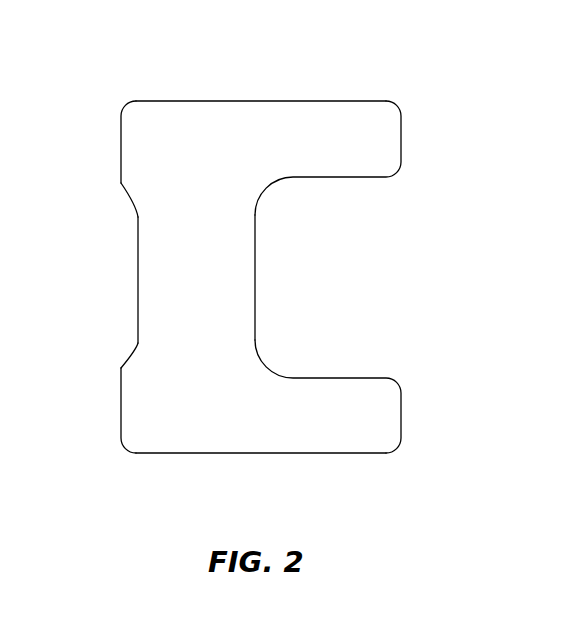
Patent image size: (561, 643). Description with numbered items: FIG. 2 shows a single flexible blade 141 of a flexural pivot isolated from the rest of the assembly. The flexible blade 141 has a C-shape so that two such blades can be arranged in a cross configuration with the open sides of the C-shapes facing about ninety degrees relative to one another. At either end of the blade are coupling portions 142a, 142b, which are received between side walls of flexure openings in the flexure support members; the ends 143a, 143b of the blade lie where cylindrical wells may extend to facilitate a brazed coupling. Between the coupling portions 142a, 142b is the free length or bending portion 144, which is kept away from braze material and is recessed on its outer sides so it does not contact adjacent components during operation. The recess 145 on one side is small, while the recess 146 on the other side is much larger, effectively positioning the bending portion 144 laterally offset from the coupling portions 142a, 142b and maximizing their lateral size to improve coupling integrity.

The flexible blade 141 is at (229, 32).
The coupling portion 142a is at (267, 122).
The coupling portion 142b is at (270, 433).
The end of flexible blade 143a is at (226, 101).
The end of flexible blade 143b is at (240, 454).
The bending portion 144 is at (183, 271).
The recess 145 is at (106, 322).
The recess 146 is at (312, 269).